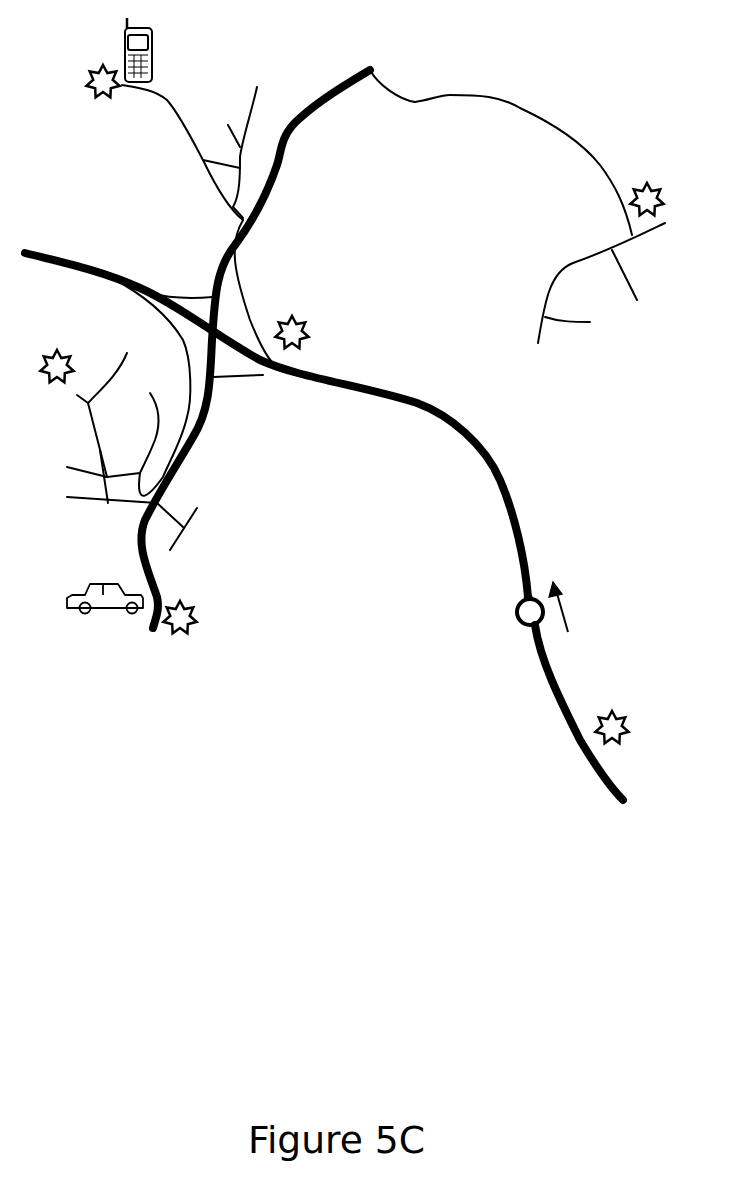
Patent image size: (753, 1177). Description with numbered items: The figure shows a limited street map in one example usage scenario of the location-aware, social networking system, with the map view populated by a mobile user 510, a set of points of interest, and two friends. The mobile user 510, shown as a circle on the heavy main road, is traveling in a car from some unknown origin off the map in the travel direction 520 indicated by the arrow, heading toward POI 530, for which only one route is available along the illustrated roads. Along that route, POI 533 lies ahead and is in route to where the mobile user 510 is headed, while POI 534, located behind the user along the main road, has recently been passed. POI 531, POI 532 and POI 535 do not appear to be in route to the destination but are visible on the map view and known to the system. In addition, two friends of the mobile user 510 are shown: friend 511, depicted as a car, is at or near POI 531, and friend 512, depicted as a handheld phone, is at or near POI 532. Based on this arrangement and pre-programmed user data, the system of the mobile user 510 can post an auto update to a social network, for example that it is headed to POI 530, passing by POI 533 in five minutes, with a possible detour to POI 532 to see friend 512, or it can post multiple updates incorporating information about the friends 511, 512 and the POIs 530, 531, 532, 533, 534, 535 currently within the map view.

The mobile user 510 is at (515, 620).
The friend 511 is at (70, 611).
The friend 512 is at (153, 45).
The travel direction 520 is at (572, 618).
The POI 530 is at (661, 190).
The POI 531 is at (194, 607).
The POI 532 is at (97, 100).
The POI 533 is at (306, 323).
The POI 534 is at (626, 717).
The POI 535 is at (70, 358).